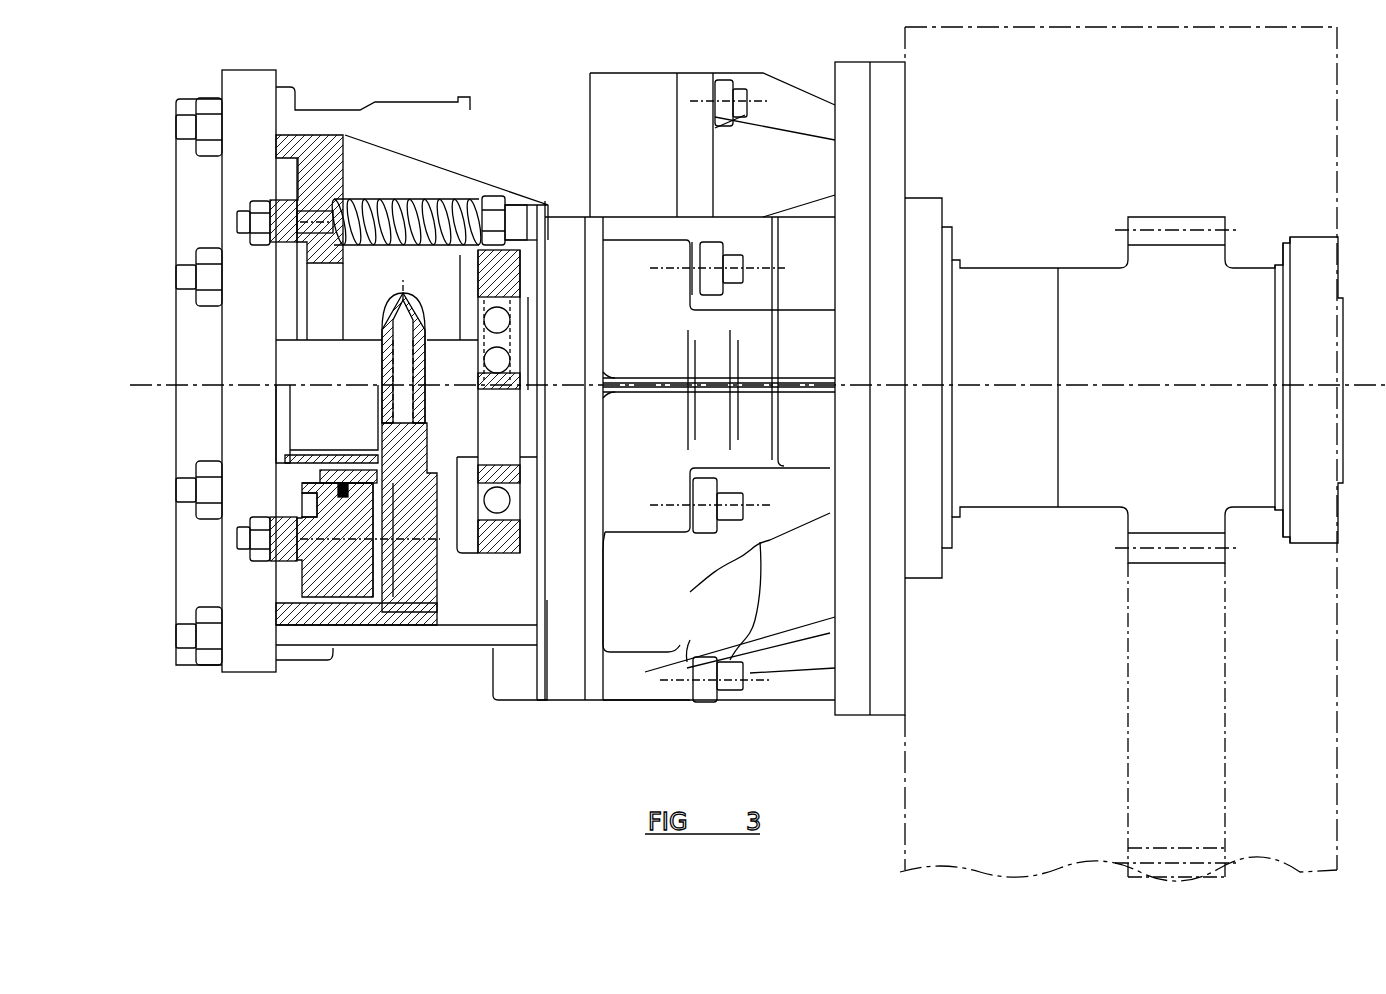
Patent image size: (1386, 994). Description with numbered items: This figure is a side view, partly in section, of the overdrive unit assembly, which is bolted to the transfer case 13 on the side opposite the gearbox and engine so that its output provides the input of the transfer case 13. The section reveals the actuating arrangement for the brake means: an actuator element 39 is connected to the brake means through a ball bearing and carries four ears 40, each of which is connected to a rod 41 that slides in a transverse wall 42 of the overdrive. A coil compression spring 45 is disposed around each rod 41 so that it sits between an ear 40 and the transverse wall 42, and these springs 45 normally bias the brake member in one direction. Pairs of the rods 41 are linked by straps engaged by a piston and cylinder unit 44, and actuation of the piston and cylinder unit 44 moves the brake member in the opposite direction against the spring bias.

The transfer case 13 is at (905, 50).
The actuator element 39 is at (485, 553).
The ear 40 is at (490, 197).
The rod 41 is at (315, 213).
The transverse wall 42 is at (345, 193).
The piston and cylinder unit 44 is at (380, 593).
The coil compression spring 45 is at (413, 198).